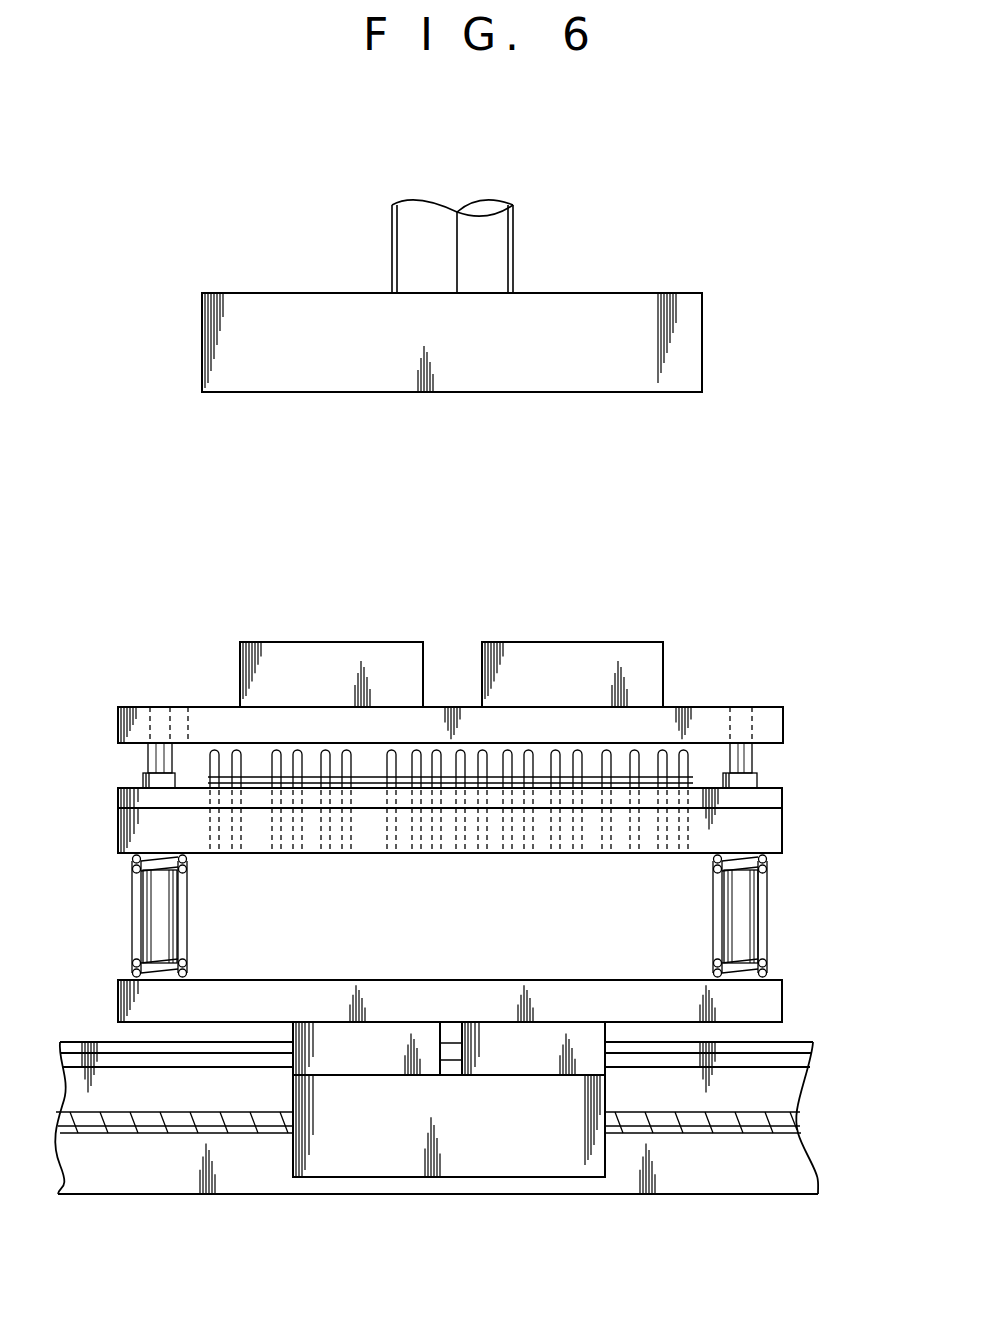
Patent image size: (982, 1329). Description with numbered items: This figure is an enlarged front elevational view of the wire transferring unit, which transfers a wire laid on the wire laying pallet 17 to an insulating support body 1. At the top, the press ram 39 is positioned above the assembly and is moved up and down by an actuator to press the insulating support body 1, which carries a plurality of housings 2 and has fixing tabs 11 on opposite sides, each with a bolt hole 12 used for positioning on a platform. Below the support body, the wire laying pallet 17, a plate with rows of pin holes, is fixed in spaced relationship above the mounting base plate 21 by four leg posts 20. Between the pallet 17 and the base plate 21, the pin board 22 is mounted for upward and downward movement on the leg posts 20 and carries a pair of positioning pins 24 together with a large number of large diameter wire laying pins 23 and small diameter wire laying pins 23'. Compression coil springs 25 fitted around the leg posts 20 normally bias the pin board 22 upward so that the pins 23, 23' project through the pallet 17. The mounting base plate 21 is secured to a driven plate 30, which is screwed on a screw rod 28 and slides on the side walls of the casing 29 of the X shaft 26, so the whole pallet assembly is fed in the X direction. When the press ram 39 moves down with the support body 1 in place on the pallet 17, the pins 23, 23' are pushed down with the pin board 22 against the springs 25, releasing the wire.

The press ram 39 is at (654, 293).
The insulating support body 1 is at (683, 708).
The housing 2 is at (597, 642).
The fixing tab 11 is at (776, 722).
The bolt hole 12 is at (741, 720).
The positioning pin 24 is at (757, 756).
The large diameter wire laying pin 23 is at (450, 716).
The small diameter wire laying pin 23' is at (187, 739).
The wire laying pallet 17 is at (770, 800).
The pin board 22 is at (763, 840).
The compression coil spring 25 is at (770, 905).
The leg post 20 is at (772, 953).
The mounting base plate 21 is at (760, 1005).
The casing 29 is at (777, 1092).
The screw rod 28 is at (698, 1136).
The X shaft 26 is at (568, 1198).
The driven plate 30 is at (388, 1068).